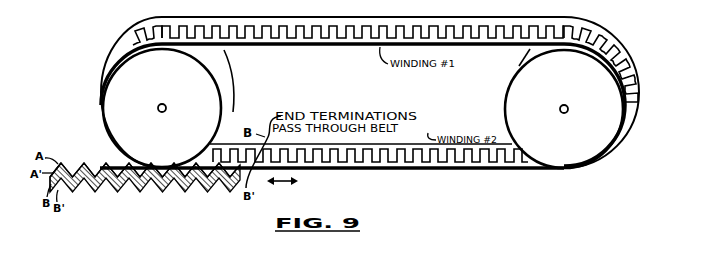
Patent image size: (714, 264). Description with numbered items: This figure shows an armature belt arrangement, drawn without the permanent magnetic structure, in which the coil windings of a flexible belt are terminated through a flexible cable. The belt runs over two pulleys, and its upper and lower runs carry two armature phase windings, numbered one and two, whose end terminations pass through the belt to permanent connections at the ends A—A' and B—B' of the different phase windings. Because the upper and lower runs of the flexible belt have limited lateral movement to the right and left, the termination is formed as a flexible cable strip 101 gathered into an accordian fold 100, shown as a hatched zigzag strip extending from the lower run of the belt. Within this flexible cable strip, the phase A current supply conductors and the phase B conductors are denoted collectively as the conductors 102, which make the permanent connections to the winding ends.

The accordian fold 100 is at (220, 195).
The flexible cable strip 101 is at (115, 186).
The phase A current supply and phase B conductors 102 is at (51, 149).